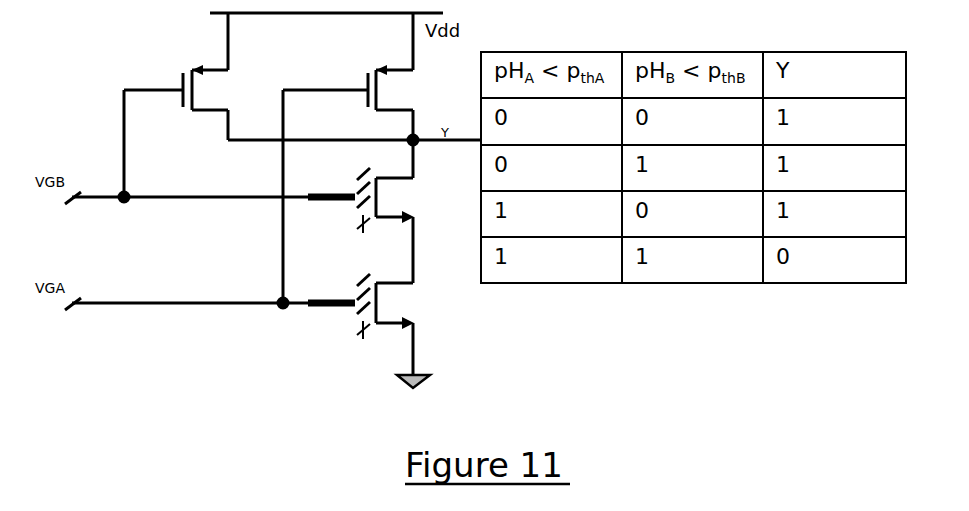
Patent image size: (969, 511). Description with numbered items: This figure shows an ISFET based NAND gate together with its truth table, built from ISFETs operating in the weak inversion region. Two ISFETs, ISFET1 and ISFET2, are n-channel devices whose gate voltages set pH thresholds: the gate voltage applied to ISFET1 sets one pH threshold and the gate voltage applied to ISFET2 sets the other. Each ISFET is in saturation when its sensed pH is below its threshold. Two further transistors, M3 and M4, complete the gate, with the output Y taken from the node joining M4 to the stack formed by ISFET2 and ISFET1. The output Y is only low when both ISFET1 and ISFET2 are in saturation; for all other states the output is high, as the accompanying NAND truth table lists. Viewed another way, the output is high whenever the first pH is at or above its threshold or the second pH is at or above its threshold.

The PMOS transistor M3 is at (176, 76).
The PMOS transistor M4 is at (348, 76).
The ion-sensitive field effect transistor 1 ISFET1 is at (376, 324).
The ion-sensitive field effect transistor 2 ISFET2 is at (376, 211).